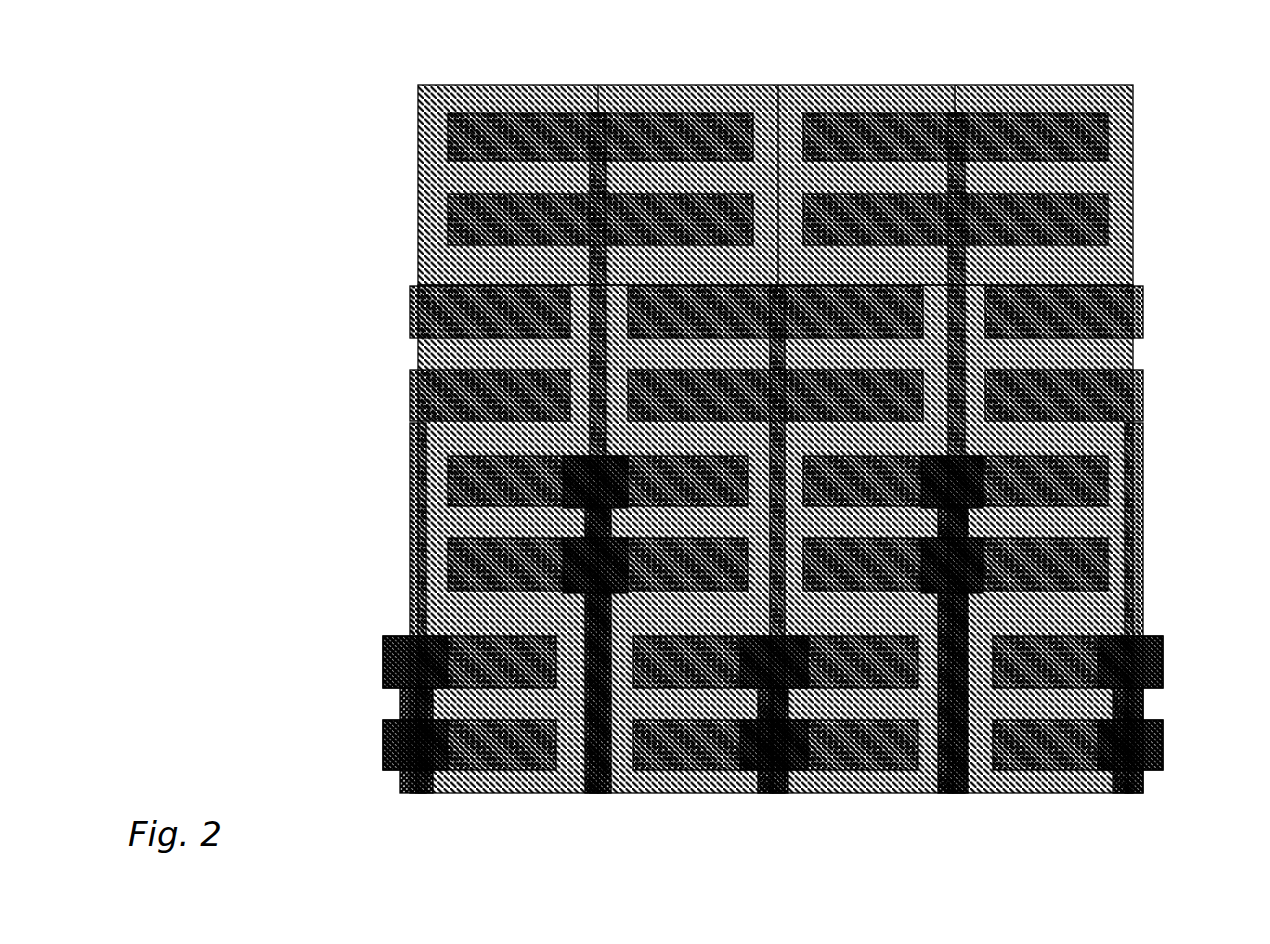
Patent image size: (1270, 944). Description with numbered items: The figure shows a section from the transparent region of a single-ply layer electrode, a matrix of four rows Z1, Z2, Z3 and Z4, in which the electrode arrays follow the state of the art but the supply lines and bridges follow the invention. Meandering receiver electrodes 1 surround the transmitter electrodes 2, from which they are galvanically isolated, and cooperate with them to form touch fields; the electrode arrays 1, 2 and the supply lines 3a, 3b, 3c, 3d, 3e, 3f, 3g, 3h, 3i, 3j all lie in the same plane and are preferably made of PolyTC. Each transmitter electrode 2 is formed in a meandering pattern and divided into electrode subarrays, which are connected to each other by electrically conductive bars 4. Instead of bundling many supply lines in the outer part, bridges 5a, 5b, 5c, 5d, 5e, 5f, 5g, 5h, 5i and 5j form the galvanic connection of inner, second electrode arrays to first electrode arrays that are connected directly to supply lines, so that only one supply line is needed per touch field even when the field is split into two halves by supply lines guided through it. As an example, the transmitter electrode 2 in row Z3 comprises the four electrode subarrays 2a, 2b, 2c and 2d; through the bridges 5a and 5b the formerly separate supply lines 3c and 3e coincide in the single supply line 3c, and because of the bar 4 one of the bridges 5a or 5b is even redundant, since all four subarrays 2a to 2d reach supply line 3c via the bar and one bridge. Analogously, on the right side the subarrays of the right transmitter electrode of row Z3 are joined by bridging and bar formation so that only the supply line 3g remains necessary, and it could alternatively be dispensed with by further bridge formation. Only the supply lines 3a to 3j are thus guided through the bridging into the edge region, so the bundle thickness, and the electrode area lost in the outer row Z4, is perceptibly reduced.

The electrode array for the electrode-receiver array 1 is at (1127, 84).
The electrode array for the electrode-transmitter array 2 is at (1060, 105).
The electrode subarray 2a is at (452, 571).
The electrode subarray 2b is at (452, 489).
The electrode subarray 2c is at (685, 489).
The electrode subarray 2d is at (685, 570).
The supply line 3a is at (398, 786).
The supply line 3b is at (420, 787).
The supply line 3c is at (585, 787).
The supply line 3d is at (603, 787).
The supply line 3e is at (742, 787).
The supply line 3f is at (776, 787).
The supply line 3g is at (940, 787).
The supply line 3h is at (950, 787).
The supply line 3i is at (1110, 787).
The supply line 3j is at (1120, 787).
The electrically conductive bar 4 is at (614, 533).
The bridge 5a is at (420, 438).
The bridge 5b is at (516, 584).
The bridge 5c is at (1133, 488).
The bridge 5d is at (1110, 585).
The bridge 5e is at (480, 706).
The bridge 5f is at (467, 785).
The bridge 5g is at (876, 710).
The bridge 5h is at (835, 785).
The bridge 5i is at (1157, 660).
The bridge 5j is at (1157, 740).
The row Z1 is at (771, 134).
The row Z2 is at (395, 288).
The row Z3 is at (748, 543).
The row Z4 is at (770, 762).